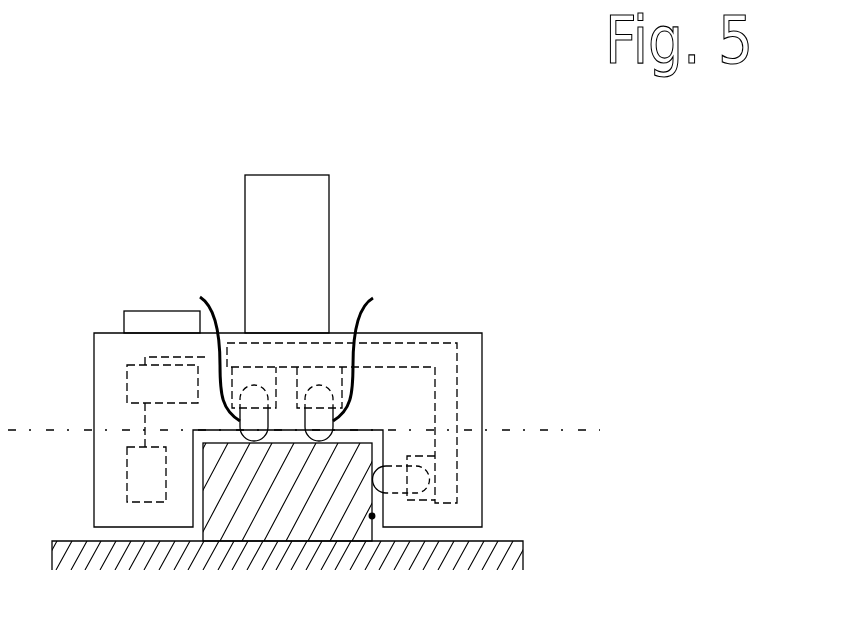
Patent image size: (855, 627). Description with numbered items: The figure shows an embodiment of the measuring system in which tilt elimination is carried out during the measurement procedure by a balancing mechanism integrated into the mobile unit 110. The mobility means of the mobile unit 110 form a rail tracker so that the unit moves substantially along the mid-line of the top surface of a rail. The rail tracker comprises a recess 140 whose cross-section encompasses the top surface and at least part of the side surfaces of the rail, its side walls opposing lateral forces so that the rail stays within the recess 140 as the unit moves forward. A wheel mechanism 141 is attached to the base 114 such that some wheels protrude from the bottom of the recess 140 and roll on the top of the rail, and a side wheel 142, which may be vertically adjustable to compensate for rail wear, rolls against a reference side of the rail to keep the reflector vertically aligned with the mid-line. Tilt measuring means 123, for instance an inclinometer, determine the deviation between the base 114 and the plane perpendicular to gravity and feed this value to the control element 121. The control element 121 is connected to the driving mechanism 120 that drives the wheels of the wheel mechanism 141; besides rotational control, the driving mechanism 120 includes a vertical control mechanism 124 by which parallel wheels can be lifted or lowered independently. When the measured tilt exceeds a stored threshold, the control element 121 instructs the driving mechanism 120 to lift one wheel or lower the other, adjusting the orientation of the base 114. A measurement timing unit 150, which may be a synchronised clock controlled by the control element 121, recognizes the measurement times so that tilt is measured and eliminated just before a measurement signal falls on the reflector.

The mobile unit 110 is at (484, 367).
The base 114 is at (565, 425).
The driving mechanism 120 is at (418, 345).
The control element 121 is at (127, 382).
The tilt measuring means 123 is at (160, 310).
The vertical control mechanism 124 is at (357, 355).
The recess 140 is at (372, 516).
The wheel mechanism 141 is at (225, 354).
The side wheel 142 is at (428, 480).
The measurement timing unit 150 is at (127, 472).